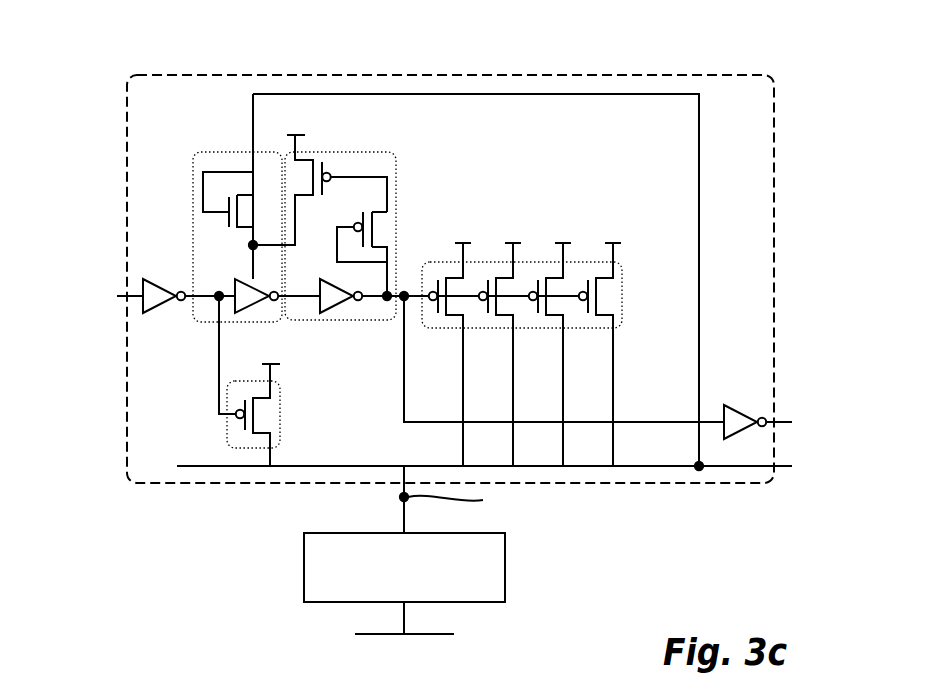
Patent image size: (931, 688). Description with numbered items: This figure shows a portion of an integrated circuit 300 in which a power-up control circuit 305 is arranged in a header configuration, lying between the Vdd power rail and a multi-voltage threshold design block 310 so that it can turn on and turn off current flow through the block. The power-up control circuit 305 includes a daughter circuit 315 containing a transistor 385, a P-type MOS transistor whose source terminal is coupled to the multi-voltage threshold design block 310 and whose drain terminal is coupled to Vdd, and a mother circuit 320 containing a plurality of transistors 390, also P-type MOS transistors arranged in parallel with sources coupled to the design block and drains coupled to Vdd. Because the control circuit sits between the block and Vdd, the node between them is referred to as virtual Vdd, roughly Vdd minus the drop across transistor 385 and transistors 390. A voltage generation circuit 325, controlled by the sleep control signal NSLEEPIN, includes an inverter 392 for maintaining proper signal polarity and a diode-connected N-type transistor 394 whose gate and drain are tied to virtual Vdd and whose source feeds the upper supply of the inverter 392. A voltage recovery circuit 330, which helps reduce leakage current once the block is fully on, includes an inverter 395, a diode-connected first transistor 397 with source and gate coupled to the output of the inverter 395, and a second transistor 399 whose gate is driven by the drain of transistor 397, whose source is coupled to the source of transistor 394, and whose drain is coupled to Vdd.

The integrated circuit 300 is at (101, 40).
The power-up control circuit 305 is at (774, 126).
The multi-voltage threshold design block 310 is at (322, 532).
The daughter circuit 315 is at (280, 396).
The mother circuit 320 is at (622, 271).
The voltage generation circuit 325 is at (195, 172).
The voltage recovery circuit 330 is at (395, 161).
The transistor 385 is at (265, 417).
The transistors 390 is at (563, 288).
The inverter 392 is at (228, 307).
The transistor 394 is at (220, 220).
The inverter 395 is at (340, 307).
The first transistor 397 is at (378, 223).
The second transistor 399 is at (329, 171).